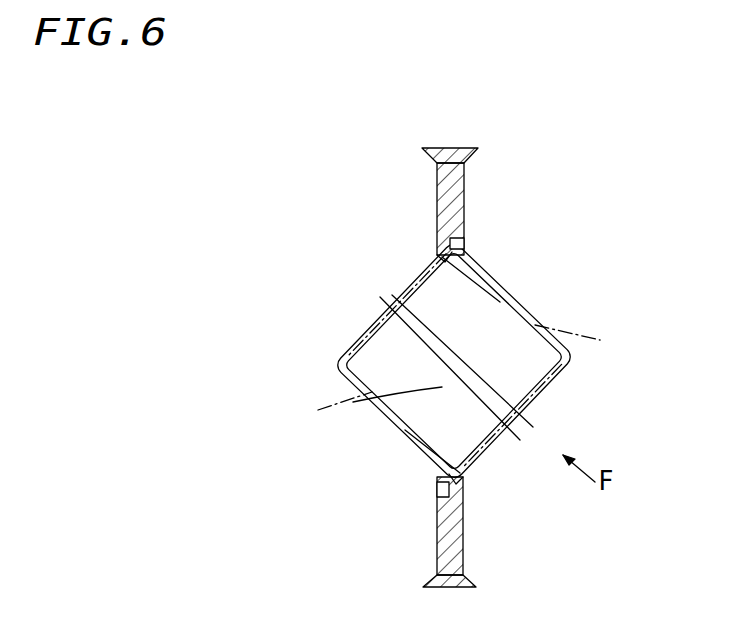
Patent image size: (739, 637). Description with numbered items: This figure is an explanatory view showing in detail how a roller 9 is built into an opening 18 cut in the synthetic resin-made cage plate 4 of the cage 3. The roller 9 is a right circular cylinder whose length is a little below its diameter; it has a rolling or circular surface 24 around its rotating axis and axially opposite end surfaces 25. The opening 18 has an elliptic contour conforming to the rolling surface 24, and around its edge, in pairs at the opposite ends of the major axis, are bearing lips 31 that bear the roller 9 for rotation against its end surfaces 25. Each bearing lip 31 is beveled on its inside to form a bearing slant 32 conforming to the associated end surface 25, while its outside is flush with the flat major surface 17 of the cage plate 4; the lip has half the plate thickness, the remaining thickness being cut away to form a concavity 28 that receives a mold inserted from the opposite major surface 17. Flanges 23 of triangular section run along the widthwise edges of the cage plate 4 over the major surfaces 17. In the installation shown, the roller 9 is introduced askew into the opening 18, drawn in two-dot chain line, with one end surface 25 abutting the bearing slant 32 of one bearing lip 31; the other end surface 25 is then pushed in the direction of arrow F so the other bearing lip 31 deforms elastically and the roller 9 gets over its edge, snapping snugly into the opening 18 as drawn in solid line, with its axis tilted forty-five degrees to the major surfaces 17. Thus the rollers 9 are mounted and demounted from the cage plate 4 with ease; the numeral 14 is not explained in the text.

The cage 3 is at (495, 233).
The cage plate 4 is at (453, 198).
The roller 9 is at (514, 356).
The bolt 14 is at (453, 359).
The major surface 17 is at (437, 540).
The opening 18 is at (322, 407).
The flange 23 is at (430, 151).
The rolling surface 24 is at (533, 324).
The end surface 25 is at (373, 323).
The concavity 28 is at (457, 247).
The bearing lip 31 is at (445, 252).
The bearing slant 32 is at (488, 278).